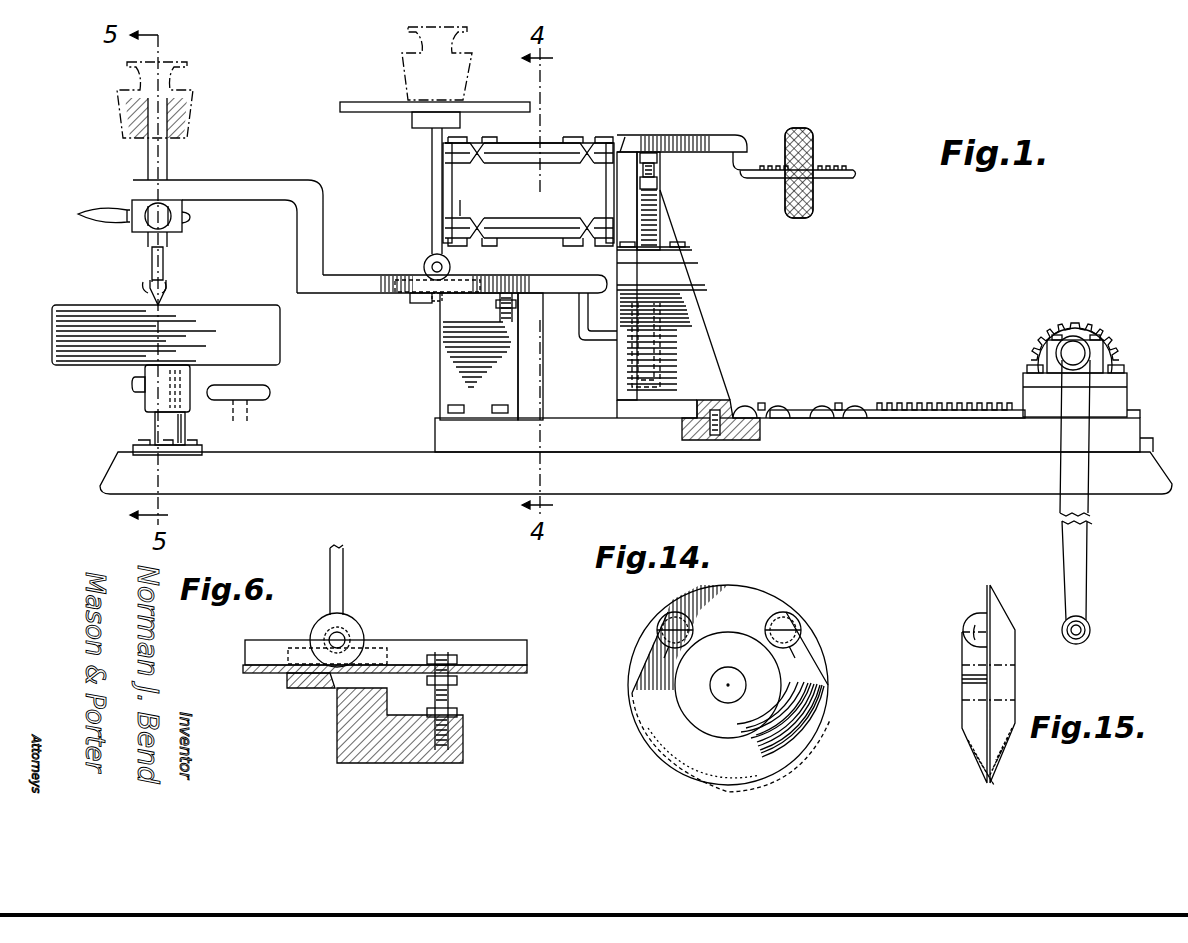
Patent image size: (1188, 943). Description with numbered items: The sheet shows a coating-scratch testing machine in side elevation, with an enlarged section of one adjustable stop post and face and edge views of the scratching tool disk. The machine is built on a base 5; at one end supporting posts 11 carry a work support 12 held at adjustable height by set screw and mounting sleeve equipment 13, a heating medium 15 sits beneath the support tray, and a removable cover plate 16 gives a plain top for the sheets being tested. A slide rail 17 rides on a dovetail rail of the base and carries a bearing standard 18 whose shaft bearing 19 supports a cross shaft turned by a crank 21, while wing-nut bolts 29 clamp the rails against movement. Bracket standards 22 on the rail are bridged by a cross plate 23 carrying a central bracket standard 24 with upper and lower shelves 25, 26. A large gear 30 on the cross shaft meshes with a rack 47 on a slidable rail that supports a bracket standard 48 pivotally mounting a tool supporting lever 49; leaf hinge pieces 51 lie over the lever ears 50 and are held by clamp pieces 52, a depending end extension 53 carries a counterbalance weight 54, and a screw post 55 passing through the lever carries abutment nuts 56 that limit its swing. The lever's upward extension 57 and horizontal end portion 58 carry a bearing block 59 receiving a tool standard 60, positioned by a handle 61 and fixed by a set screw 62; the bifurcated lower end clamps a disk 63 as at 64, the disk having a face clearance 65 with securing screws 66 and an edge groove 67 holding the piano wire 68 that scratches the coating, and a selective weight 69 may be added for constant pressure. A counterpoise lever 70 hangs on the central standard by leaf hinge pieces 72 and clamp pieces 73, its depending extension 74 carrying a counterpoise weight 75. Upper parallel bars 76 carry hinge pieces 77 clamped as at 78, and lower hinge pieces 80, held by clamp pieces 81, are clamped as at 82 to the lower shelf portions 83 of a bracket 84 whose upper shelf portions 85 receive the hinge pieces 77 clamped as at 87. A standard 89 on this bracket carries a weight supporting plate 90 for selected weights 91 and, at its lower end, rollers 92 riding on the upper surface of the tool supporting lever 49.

In FIG. 1, the base 5 is at (636, 473).
In FIG. 1, the supporting posts 11 is at (155, 429).
In FIG. 1, the work support 12 is at (48, 358).
In FIG. 1, the set screw and mounting sleeve equipment 13 is at (135, 390).
In FIG. 1, the heating medium 15 is at (265, 400).
In FIG. 1, the removable cover plate 16 is at (270, 305).
In FIG. 1, the slide rail 17 is at (922, 440).
In FIG. 1, the bearing standard 18 is at (1120, 398).
In FIG. 1, the shaft bearing 19 is at (1090, 345).
In FIG. 1, the crank 21 is at (1062, 548).
In FIG. 1, the bracket standards 22 is at (712, 374).
In FIG. 1, the cross plate 23 is at (688, 262).
In FIG. 1, the central bracket standard 24 is at (665, 211).
In FIG. 1, the upper supporting shelves 25 is at (582, 162).
In FIG. 1, the lower supporting shelves 26 is at (618, 238).
In FIG. 1, the wing-nut bolts 29 is at (822, 400).
In FIG. 1, the large gear 30 is at (1082, 324).
In FIG. 1, the rack 47 is at (935, 408).
In FIG. 1, the bracket standard 48 is at (442, 368).
In FIG. 6, the bracket standard 48 is at (340, 730).
In FIG. 1, the tool supporting lever 49 is at (335, 297).
In FIG. 6, the tool supporting lever 49 is at (505, 640).
In FIG. 1, the laterally extended ears 50 is at (415, 306).
In FIG. 6, the laterally extended ears 50 is at (325, 690).
In FIG. 1, the leaf hinge pieces 51 is at (430, 304).
In FIG. 6, the leaf hinge pieces 51 is at (295, 690).
In FIG. 1, the clamp pieces 52 is at (392, 296).
In FIG. 6, the clamp pieces 52 is at (296, 648).
In FIG. 1, the depending end extension 53 is at (595, 345).
In FIG. 1, the counterbalance weight 54 is at (628, 372).
In FIG. 1, the screw post 55 is at (514, 302).
In FIG. 6, the screw post 55 is at (460, 710).
In FIG. 1, the abutment nuts 56 is at (510, 326).
In FIG. 6, the abutment nuts 56 is at (440, 654).
In FIG. 1, the upward extension 57 is at (300, 243).
In FIG. 1, the horizontally disposed end portion 58 is at (248, 196).
In FIG. 1, the bearing block 59 is at (136, 232).
In FIG. 1, the tool standard 60 is at (168, 170).
In FIG. 1, the handle 61 is at (98, 210).
In FIG. 1, the set screw 62 is at (186, 223).
In FIG. 1, the disk 63 is at (148, 300).
In FIG. 14, the disk 63 is at (660, 735).
In FIG. 15, the disk 63 is at (968, 730).
In FIG. 1, the clamp 64 is at (168, 288).
In FIG. 14, the face clearance 65 is at (765, 607).
In FIG. 15, the face clearance 65 is at (987, 597).
In FIG. 14, the securing screws 66 is at (658, 620).
In FIG. 15, the securing screws 66 is at (972, 620).
In FIG. 14, the edge groove 67 is at (672, 758).
In FIG. 15, the edge groove 67 is at (982, 782).
In FIG. 14, the piano wire 68 is at (634, 716).
In FIG. 15, the piano wire 68 is at (988, 750).
In FIG. 1, the selective weight 69 is at (120, 118).
In FIG. 1, the counterpoise lever 70 is at (740, 122).
In FIG. 1, the leaf hinge pieces 72 is at (625, 137).
In FIG. 1, the clamp pieces 73 is at (612, 137).
In FIG. 1, the depending end extension 74 is at (768, 180).
In FIG. 1, the counterpoise weight 75 is at (792, 218).
In FIG. 1, the upper parallel bar 76 is at (547, 144).
In FIG. 1, the hinge pieces 77 is at (505, 143).
In FIG. 1, the clamp 78 is at (500, 160).
In FIG. 1, the hinge pieces 80 is at (522, 232).
In FIG. 1, the clamp pieces 81 is at (608, 222).
In FIG. 1, the clamp 82 is at (447, 236).
In FIG. 1, the lower shelf portions 83 is at (467, 197).
In FIG. 1, the bracket 84 is at (445, 192).
In FIG. 1, the upper shelf portions 85 is at (450, 160).
In FIG. 1, the clamp 87 is at (450, 146).
In FIG. 1, the standard 89 is at (432, 222).
In FIG. 6, the standard 89 is at (343, 585).
In FIG. 1, the weight supporting plate 90 is at (395, 104).
In FIG. 1, the selected weights 91 is at (402, 64).
In FIG. 1, the wheels or rollers 92 is at (424, 267).
In FIG. 6, the wheels or rollers 92 is at (320, 624).